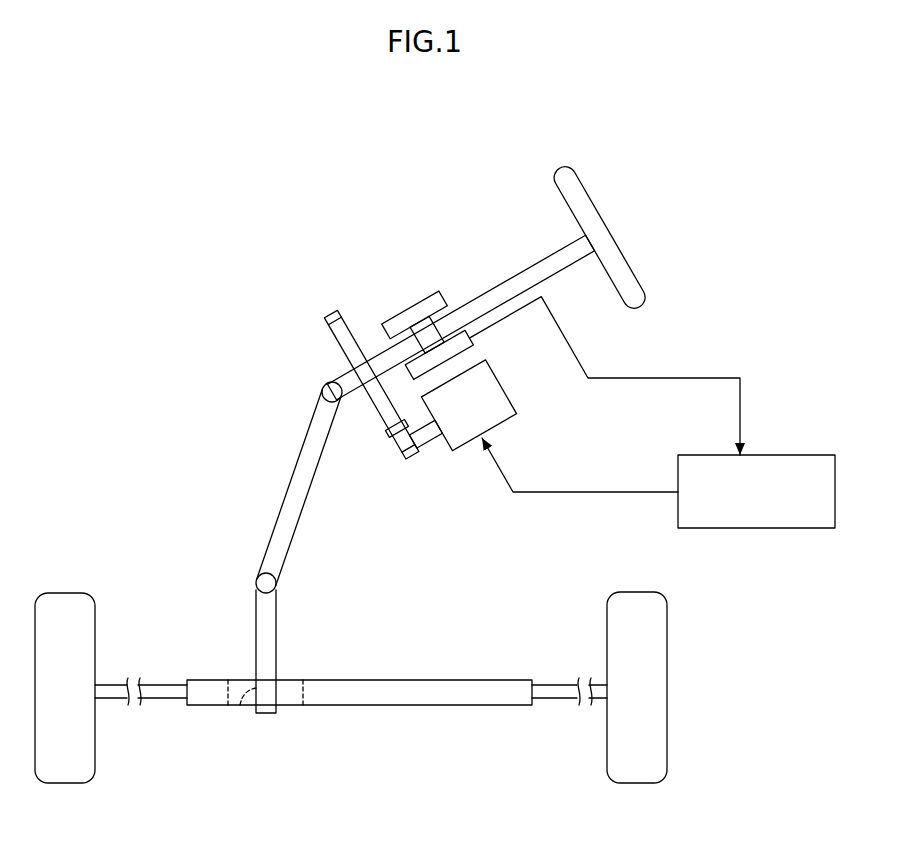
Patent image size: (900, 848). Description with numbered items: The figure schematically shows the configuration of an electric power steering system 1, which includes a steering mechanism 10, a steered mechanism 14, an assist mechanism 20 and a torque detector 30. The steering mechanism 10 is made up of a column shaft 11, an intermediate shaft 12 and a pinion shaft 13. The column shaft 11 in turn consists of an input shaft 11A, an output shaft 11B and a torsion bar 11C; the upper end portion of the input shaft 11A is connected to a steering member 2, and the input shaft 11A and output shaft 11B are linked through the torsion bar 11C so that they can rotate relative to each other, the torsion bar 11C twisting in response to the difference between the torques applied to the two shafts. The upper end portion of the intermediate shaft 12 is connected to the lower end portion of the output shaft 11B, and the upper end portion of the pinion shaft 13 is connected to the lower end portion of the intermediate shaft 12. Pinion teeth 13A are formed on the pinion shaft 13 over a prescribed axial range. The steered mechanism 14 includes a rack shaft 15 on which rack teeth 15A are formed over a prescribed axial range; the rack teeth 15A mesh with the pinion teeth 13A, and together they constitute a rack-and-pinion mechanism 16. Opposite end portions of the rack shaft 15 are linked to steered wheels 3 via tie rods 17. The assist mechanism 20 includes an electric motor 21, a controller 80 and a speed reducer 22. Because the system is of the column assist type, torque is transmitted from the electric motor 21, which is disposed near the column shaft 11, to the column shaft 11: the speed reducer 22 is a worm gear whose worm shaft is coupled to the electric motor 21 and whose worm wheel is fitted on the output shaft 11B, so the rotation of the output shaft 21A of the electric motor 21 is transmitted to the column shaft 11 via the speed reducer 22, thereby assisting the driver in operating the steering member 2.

The electric power steering system 1 is at (375, 152).
The steering member 2 is at (643, 278).
The steered wheels 3 is at (63, 593).
The steering mechanism 10 is at (217, 362).
The column shaft 11 is at (519, 190).
The input shaft 11A is at (520, 270).
The output shaft 11B is at (368, 348).
The torsion bar 11C is at (415, 322).
The intermediate shaft 12 is at (298, 458).
The pinion shaft 13 is at (256, 590).
The pinion teeth 13A is at (240, 705).
The steered mechanism 14 is at (467, 662).
The rack shaft 15 is at (370, 678).
The rack teeth 15A is at (287, 702).
The rack-and-pinion mechanism 16 is at (197, 752).
The tie rods 17 is at (157, 683).
The assist mechanism 20 is at (392, 522).
The electric motor 21 is at (470, 442).
The output shaft of the electric motor 21A is at (430, 437).
The speed reducer 22 is at (397, 437).
The torque detector 30 is at (472, 340).
The controller 80 is at (836, 492).